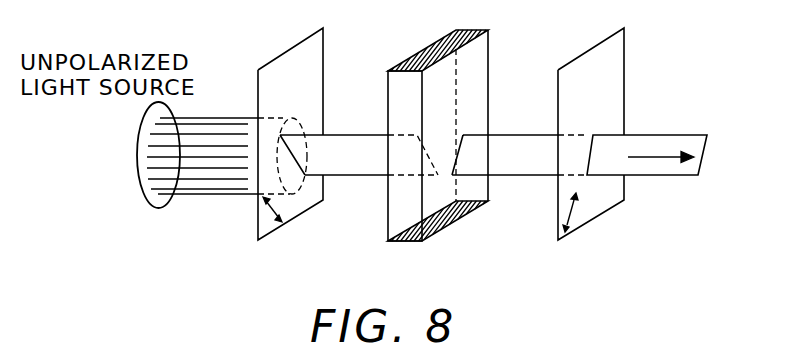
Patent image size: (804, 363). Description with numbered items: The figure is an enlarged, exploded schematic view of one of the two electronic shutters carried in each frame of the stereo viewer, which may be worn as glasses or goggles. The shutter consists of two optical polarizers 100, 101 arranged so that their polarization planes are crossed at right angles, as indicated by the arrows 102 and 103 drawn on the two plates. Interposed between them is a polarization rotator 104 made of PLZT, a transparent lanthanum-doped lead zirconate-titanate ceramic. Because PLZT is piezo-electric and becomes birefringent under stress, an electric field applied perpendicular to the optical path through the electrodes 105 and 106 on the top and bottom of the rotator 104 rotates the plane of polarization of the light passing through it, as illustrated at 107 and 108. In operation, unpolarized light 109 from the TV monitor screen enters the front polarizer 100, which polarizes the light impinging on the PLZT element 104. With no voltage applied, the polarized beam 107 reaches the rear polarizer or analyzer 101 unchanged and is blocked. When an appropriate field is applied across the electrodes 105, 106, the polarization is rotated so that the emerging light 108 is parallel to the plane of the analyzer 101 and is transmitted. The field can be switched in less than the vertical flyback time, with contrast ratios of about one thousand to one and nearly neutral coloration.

The front optical polarizer 100 is at (302, 57).
The rear polarizer or analyzer 101 is at (608, 57).
The polarization plane of front polarizer 102 is at (282, 219).
The polarization plane of analyzer 103 is at (570, 214).
The polarization rotator 104 is at (475, 78).
The electrode 105 is at (444, 38).
The electrode 106 is at (462, 224).
The polarized light 107 is at (350, 138).
The rotated polarized light 108 is at (643, 140).
The unpolarized light 109 is at (208, 196).